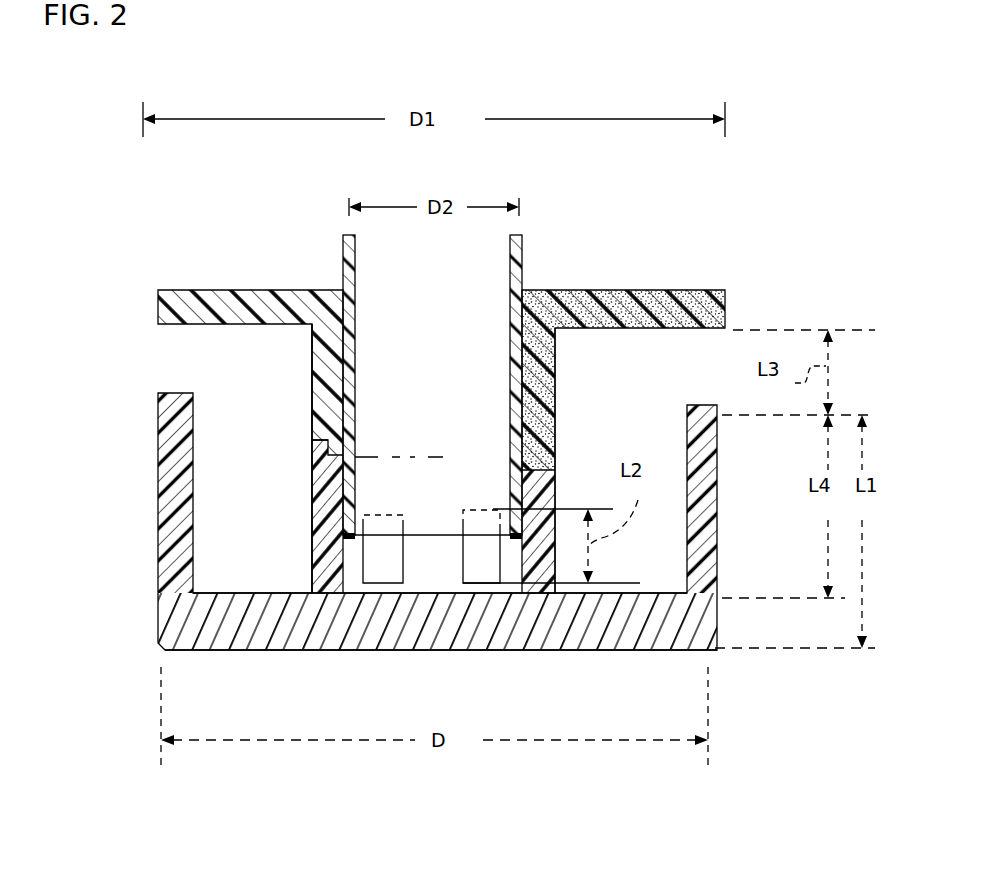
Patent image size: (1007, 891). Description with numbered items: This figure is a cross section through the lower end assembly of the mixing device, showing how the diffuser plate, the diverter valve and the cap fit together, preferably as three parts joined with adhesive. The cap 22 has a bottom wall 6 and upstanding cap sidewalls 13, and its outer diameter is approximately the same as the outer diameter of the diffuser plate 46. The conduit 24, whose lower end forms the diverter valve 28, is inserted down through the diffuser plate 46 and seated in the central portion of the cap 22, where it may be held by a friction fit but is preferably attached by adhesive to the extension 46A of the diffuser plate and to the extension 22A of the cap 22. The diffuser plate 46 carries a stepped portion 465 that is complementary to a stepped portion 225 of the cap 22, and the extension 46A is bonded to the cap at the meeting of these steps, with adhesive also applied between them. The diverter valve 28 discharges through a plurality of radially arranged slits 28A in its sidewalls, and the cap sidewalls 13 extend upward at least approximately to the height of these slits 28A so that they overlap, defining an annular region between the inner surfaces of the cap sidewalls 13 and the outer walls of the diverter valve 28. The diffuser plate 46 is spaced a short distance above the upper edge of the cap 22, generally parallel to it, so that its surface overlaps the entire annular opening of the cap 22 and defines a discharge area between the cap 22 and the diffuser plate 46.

The cap sidewalls 13 is at (193, 498).
The cap 22 is at (300, 650).
The bottom wall 6 is at (435, 650).
The diffuser plate 46 is at (195, 292).
The extension of the diffuser plate 46A is at (312, 395).
The stepped portion of the diverter plate 465 is at (312, 421).
The stepped portion of the cap 225 is at (312, 460).
The diverter valve 28 is at (575, 391).
The extension of the cap 22A is at (553, 476).
The conduit 24 is at (522, 290).
The slits 28A is at (387, 565).